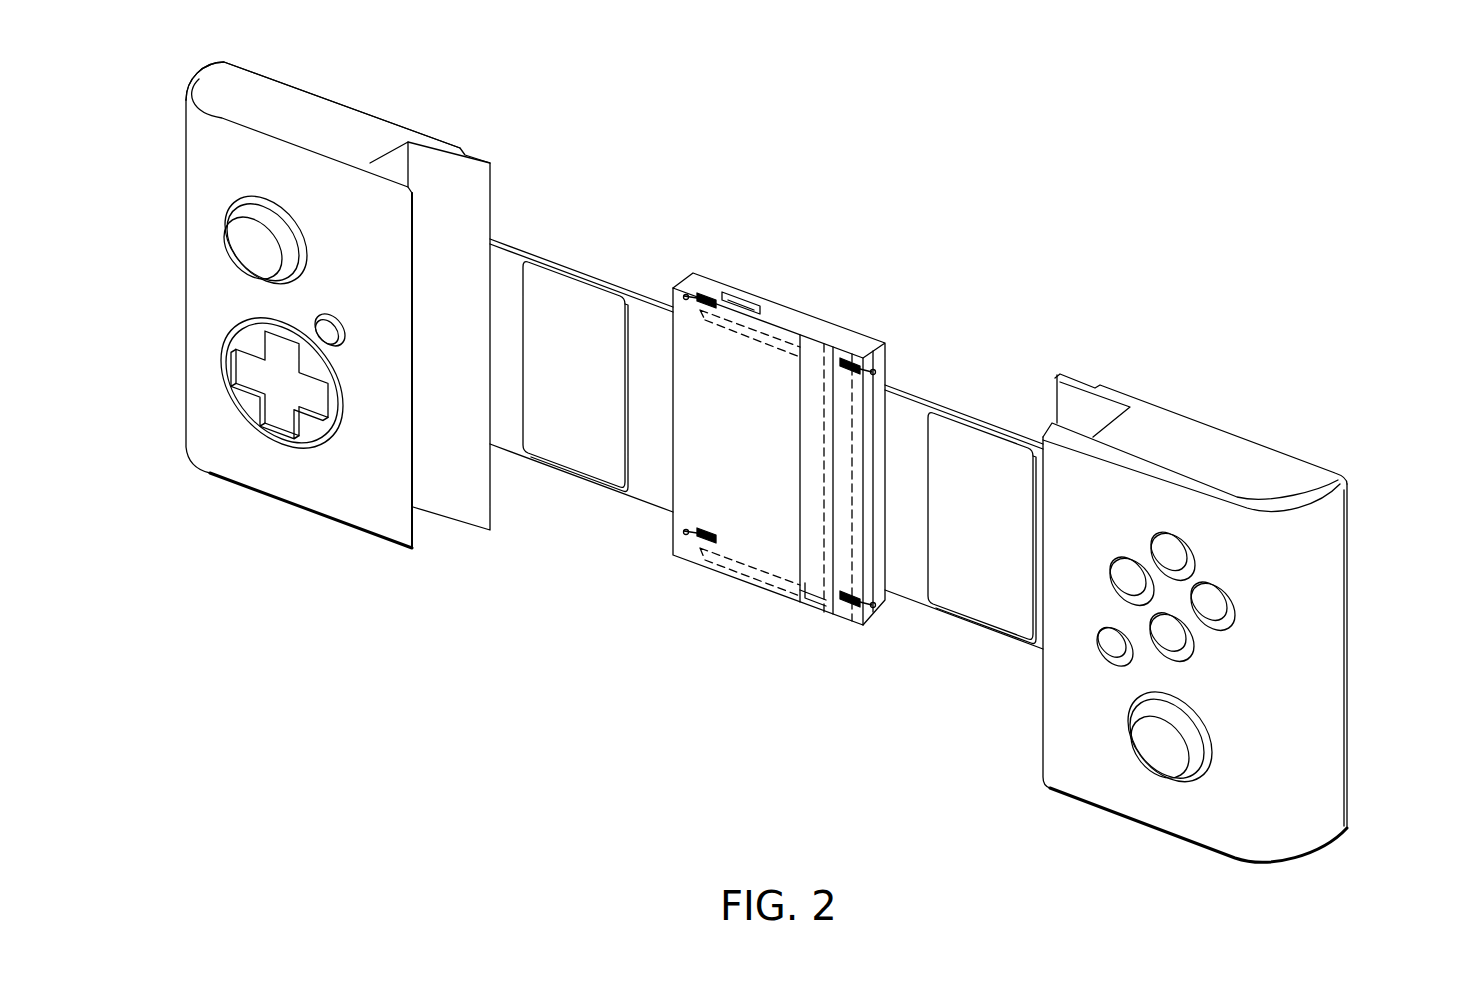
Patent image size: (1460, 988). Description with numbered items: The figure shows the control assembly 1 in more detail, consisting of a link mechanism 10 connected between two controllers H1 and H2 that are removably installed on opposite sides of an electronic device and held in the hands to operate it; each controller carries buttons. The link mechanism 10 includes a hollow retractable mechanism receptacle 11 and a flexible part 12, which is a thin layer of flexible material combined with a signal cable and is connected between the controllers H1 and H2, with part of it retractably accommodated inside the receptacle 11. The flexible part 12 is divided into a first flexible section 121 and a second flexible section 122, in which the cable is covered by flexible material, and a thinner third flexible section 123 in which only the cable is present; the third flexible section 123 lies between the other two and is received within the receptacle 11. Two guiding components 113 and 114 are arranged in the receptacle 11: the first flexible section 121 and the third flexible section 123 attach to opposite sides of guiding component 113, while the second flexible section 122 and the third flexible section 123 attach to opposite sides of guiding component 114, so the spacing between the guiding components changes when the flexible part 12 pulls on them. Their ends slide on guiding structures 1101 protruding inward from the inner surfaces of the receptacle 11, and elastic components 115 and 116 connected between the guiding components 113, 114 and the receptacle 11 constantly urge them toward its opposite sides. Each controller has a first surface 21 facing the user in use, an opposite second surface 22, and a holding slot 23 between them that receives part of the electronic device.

The control assembly 1 is at (440, 58).
The link mechanism 10 is at (900, 173).
The retractable mechanism receptacle 11 is at (823, 308).
The flexible part 12 is at (926, 142).
The first surface 21 is at (227, 448).
The second surface 22 is at (293, 85).
The holding slot 23 is at (416, 222).
The guiding component 113 is at (815, 587).
The guiding component 114 is at (741, 290).
The elastic component 115 is at (853, 352).
The elastic component 116 is at (708, 290).
The first flexible section 121 is at (580, 272).
The second flexible section 122 is at (965, 412).
The third flexible section 123 is at (845, 483).
The guiding structure 1101 is at (782, 308).
The controller H1 is at (178, 278).
The controller H2 is at (1355, 670).